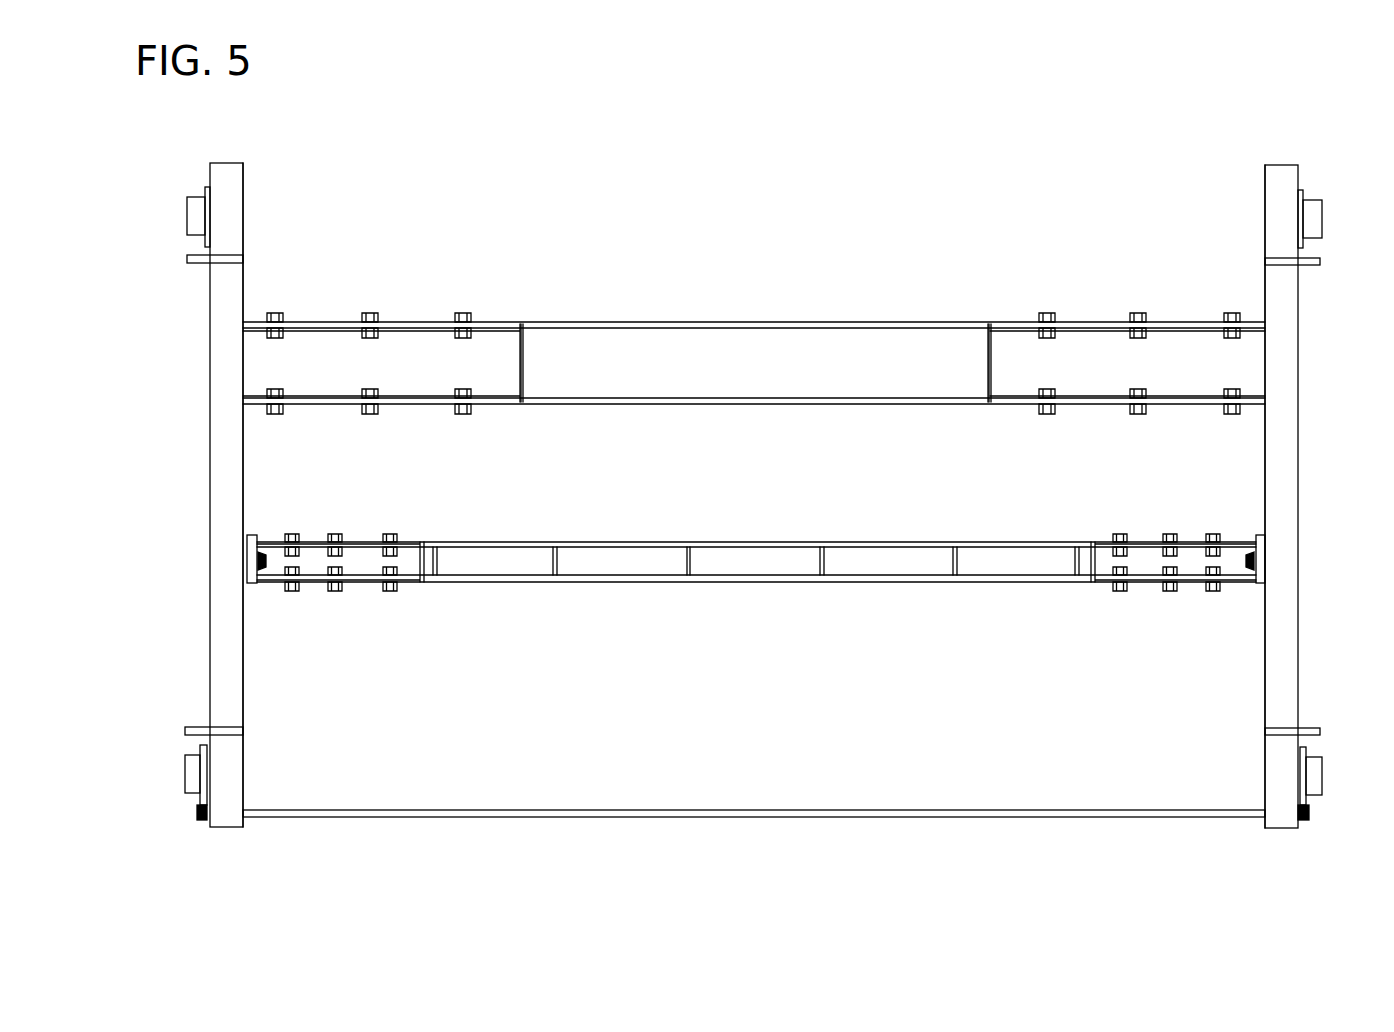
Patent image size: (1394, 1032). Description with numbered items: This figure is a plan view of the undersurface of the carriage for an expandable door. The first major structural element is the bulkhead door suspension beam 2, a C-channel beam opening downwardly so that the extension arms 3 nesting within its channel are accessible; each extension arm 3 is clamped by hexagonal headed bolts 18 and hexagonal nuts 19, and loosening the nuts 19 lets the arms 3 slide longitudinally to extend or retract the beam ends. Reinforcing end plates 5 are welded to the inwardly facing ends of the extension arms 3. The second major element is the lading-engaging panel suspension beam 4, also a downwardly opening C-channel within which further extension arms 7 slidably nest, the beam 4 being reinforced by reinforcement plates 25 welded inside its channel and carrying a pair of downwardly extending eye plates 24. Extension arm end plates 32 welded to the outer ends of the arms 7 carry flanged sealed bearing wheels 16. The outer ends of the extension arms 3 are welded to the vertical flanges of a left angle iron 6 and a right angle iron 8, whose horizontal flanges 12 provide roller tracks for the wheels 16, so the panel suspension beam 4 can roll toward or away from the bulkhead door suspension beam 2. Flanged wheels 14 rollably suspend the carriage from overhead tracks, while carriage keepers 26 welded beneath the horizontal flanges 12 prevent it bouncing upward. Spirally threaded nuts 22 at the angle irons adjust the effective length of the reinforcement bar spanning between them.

The bulkhead door suspension beam 2 is at (823, 320).
The extension arms 3 is at (483, 368).
The lading-engaging panel suspension beam 4 is at (571, 588).
The reinforcing end plates 5 is at (527, 357).
The left angle iron 6 is at (1298, 468).
The extension arms 7 is at (405, 568).
The right angle iron 8 is at (210, 463).
The horizontal flanges 12 is at (225, 513).
The flanged wheels 14 is at (197, 211).
The flanged sealed bearing wheels 16 is at (253, 590).
The hexagonal headed bolts 18 is at (462, 316).
The hexagonal nuts 19 is at (463, 342).
The spirally threaded nuts 22 is at (205, 812).
The eye plates 24 is at (445, 545).
The reinforcement plates 25 is at (695, 578).
The carriage keepers 26 is at (218, 260).
The extension arm end plates 32 is at (254, 538).